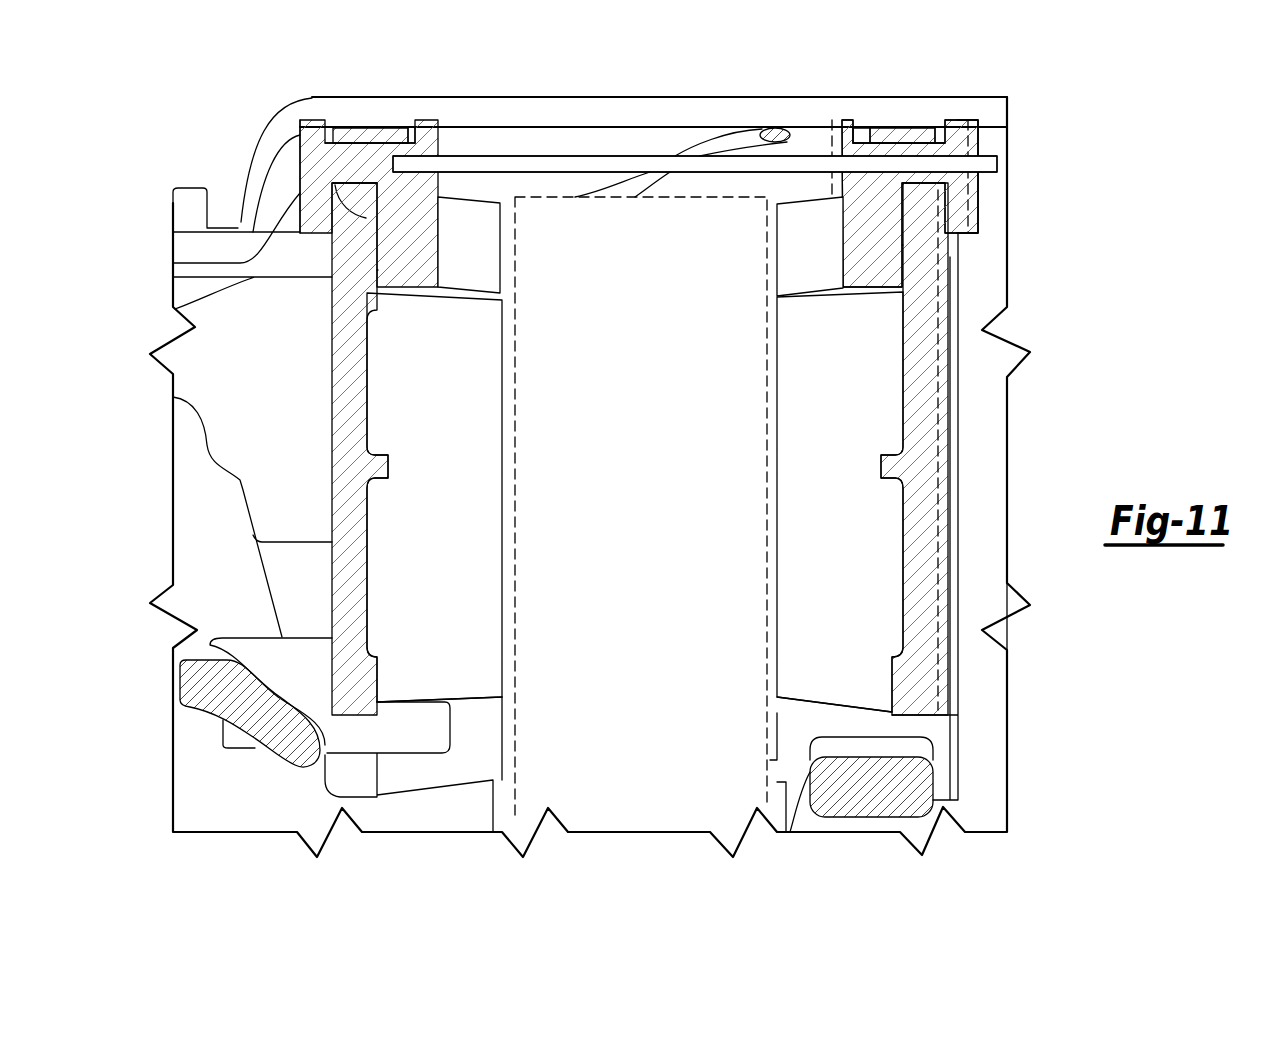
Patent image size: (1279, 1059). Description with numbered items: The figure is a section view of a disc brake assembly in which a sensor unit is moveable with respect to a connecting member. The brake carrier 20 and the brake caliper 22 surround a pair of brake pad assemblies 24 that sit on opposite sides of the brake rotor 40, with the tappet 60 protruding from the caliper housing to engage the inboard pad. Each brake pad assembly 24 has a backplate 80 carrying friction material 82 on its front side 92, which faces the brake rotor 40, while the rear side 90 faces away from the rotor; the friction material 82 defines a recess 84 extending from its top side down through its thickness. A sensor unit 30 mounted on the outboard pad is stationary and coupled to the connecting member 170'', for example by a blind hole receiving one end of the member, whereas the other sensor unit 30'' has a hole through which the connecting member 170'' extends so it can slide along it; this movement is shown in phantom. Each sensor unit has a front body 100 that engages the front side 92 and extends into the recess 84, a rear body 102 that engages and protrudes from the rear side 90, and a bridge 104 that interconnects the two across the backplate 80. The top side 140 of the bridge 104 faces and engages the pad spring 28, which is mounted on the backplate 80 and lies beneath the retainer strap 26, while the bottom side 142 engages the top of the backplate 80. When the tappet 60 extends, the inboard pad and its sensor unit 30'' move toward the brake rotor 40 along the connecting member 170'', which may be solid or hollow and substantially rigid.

The brake carrier 20 is at (885, 815).
The brake caliper 22 is at (173, 480).
The brake pad assembly 24 is at (458, 688).
The retainer strap 26 is at (618, 97).
The pad spring 28 is at (367, 127).
The sensor unit 30 is at (341, 161).
The sensor unit 30'' is at (958, 161).
The brake rotor 40 is at (653, 805).
The tappet 60 is at (988, 388).
The backplate 80 is at (364, 476).
The friction material 82 is at (450, 453).
The recess 84 is at (498, 265).
The rear side 90 is at (948, 457).
The front side 92 is at (377, 270).
The front body 100 is at (437, 242).
The rear body 102 is at (290, 192).
The bridge 104 is at (375, 150).
The top side 140 is at (408, 137).
The bottom side 142 is at (347, 190).
The connecting member 170'' is at (695, 183).